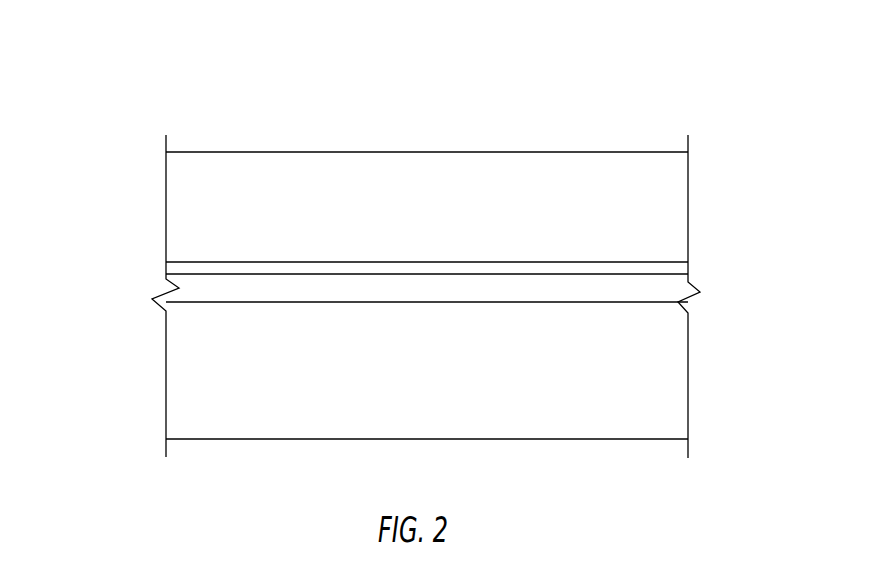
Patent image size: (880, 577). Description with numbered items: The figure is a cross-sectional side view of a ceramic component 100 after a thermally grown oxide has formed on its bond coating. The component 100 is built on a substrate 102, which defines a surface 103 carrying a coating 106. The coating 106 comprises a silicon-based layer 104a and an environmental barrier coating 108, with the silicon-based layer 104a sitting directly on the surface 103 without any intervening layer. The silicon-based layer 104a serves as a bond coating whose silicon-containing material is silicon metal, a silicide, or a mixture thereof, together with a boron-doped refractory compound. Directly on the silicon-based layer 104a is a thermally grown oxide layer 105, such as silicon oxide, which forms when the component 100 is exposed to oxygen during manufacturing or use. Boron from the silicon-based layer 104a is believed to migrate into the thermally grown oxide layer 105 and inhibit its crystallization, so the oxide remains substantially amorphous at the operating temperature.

The ceramic component 100 is at (112, 98).
The substrate 102 is at (287, 395).
The surface 103 is at (492, 300).
The silicon-based layer 104a is at (657, 293).
The thermally grown oxide layer 105 is at (657, 267).
The coating 106 is at (148, 213).
The environmental barrier coating 108 is at (488, 160).